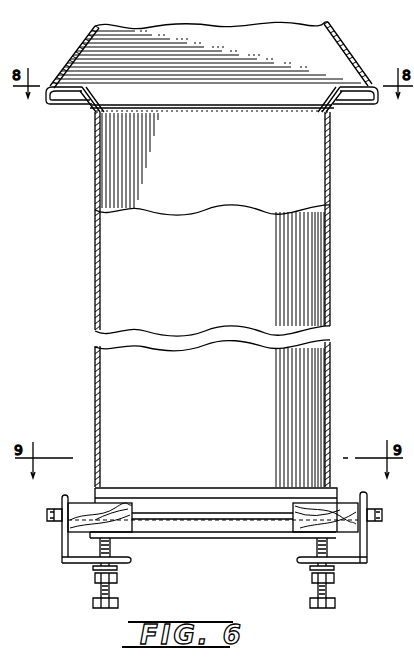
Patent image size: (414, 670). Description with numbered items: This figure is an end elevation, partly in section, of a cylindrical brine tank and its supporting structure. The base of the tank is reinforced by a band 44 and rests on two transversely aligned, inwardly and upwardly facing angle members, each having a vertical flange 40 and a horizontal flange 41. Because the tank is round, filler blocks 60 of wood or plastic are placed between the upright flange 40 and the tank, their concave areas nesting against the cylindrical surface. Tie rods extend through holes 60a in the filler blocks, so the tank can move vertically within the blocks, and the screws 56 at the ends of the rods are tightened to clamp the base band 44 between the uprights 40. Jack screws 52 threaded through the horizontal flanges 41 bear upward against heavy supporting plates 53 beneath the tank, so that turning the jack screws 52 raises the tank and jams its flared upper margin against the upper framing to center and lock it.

The band 44 is at (240, 492).
The filler block 60 is at (84, 501).
The hole 60a is at (134, 540).
The supporting plate 53 is at (222, 540).
The vertical flange 40 is at (65, 540).
The horizontal flange 41 is at (85, 561).
The screw 56 is at (54, 522).
The jack screw 52 is at (117, 584).